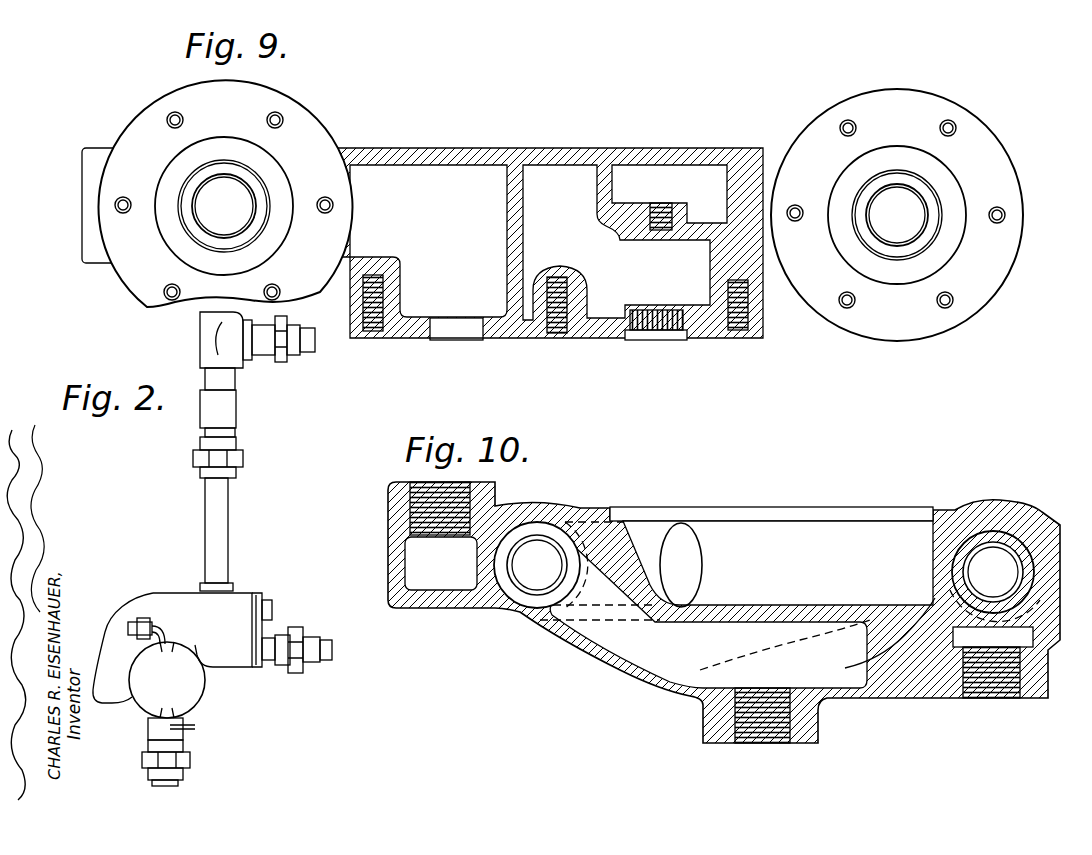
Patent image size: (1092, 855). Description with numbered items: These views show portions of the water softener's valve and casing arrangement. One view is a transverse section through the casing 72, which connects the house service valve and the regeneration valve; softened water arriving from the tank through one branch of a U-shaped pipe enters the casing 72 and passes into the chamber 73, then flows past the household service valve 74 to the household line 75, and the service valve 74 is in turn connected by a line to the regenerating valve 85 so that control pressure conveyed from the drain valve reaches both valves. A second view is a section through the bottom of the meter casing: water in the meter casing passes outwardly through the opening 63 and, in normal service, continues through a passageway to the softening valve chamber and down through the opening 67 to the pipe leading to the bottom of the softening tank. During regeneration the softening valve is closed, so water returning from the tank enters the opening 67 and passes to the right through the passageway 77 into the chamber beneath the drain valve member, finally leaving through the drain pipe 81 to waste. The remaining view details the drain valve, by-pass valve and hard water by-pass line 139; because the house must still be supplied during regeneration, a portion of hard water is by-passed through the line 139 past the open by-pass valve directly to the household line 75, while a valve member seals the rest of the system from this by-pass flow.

In FIG. 9, the household service valve 74 is at (150, 118).
In FIG. 9, the chamber 73 is at (455, 175).
In FIG. 9, the casing 72 is at (577, 180).
In FIG. 9, the regenerating valve 85 is at (925, 118).
In FIG. 9, the household line 75 is at (448, 336).
In FIG. 2, the by-pass line 139 is at (228, 515).
In FIG. 10, the opening 63 is at (528, 605).
In FIG. 10, the passageway 77 is at (850, 688).
In FIG. 10, the drain pipe 81 is at (992, 690).
In FIG. 10, the opening 67 is at (757, 738).